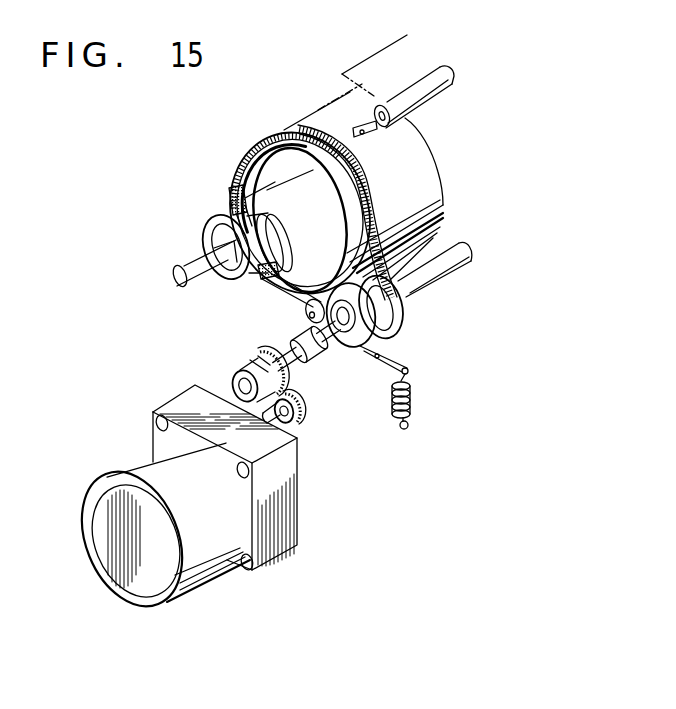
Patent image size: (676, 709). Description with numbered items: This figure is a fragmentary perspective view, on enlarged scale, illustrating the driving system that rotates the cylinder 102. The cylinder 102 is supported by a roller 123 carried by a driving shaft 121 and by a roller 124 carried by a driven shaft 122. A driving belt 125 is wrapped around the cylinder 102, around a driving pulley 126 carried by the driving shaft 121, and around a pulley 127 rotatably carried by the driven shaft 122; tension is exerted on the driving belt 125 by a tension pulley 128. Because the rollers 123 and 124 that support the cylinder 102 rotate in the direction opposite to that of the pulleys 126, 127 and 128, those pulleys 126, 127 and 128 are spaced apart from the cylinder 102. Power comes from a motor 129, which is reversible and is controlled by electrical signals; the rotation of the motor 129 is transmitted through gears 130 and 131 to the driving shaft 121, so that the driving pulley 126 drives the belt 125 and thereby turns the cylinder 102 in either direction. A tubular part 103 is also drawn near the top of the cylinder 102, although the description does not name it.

The cylinder 102 is at (342, 110).
The tube 103 is at (372, 132).
The driving shaft 121 is at (460, 246).
The driven shaft 122 is at (198, 255).
The roller 123 is at (360, 345).
The roller 124 is at (212, 220).
The driving belt 125 is at (283, 135).
The driving pulley 126 is at (410, 312).
The pulley 127 is at (287, 235).
The tension pulley 128 is at (307, 310).
The motor 129 is at (100, 485).
The gear 130 is at (305, 413).
The gear 131 is at (248, 353).